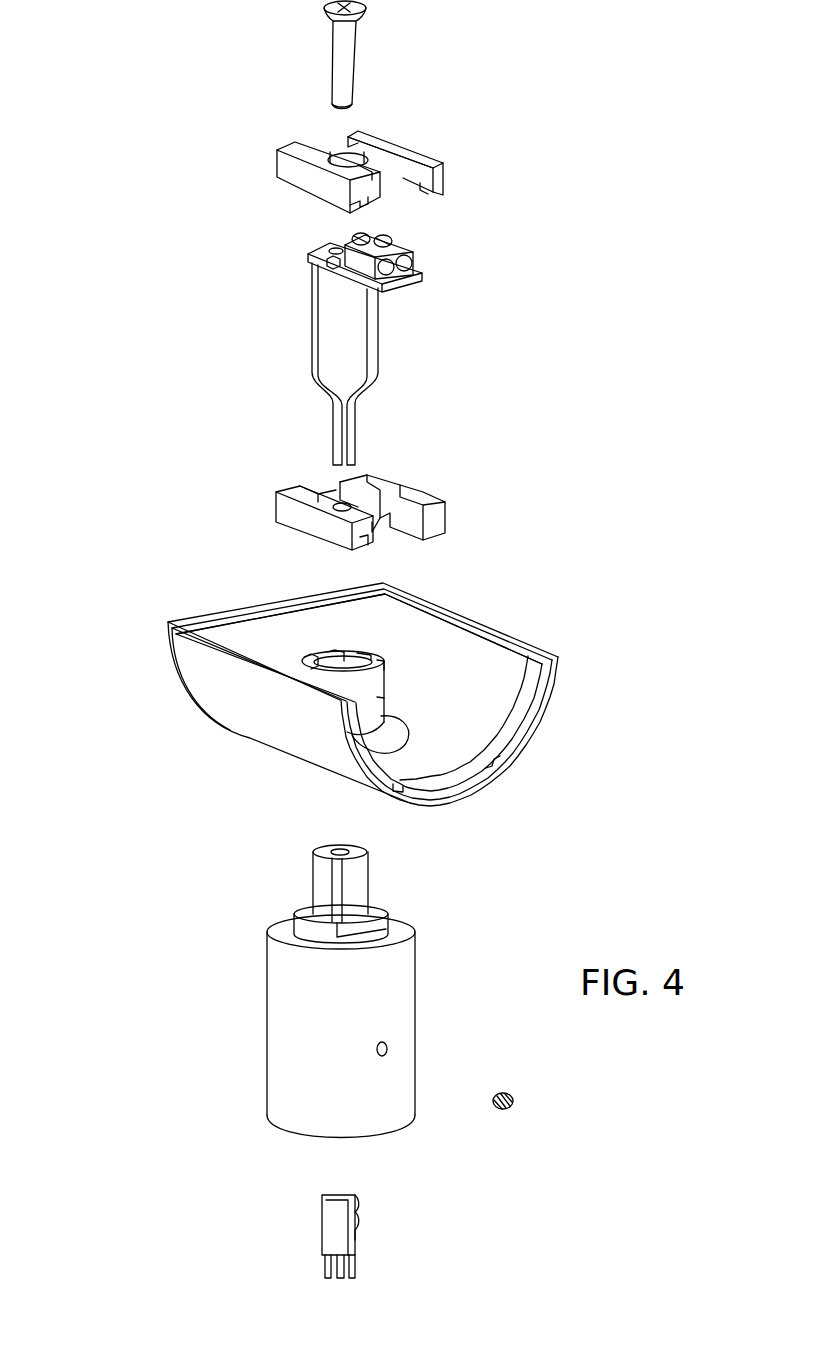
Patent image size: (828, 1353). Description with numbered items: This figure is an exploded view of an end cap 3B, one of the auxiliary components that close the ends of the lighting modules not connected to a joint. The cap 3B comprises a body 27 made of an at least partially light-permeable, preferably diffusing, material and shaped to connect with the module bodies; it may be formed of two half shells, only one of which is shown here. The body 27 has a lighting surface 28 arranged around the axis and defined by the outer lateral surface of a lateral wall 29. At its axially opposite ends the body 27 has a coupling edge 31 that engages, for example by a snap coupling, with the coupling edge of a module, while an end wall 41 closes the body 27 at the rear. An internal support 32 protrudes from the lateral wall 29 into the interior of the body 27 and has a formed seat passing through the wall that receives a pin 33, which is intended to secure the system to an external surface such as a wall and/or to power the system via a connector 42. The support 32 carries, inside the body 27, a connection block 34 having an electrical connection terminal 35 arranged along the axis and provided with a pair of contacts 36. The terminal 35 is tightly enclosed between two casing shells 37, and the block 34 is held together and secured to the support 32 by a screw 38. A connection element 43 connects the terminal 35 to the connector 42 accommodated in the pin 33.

The end cap 3B is at (160, 228).
The body 27 is at (247, 717).
The lighting surface 28 is at (307, 724).
The lateral wall 29 is at (497, 662).
The coupling edge 31 is at (542, 717).
The internal support 32 is at (381, 698).
The pin 33 is at (397, 983).
The connection block 34 is at (475, 202).
The electrical connection terminal 35 is at (412, 253).
The contacts 36 is at (398, 274).
The casing shells 37 is at (416, 157).
The screw 38 is at (345, 43).
The end wall 41 is at (248, 630).
The connector 42 is at (337, 1242).
The connection element 43 is at (377, 369).